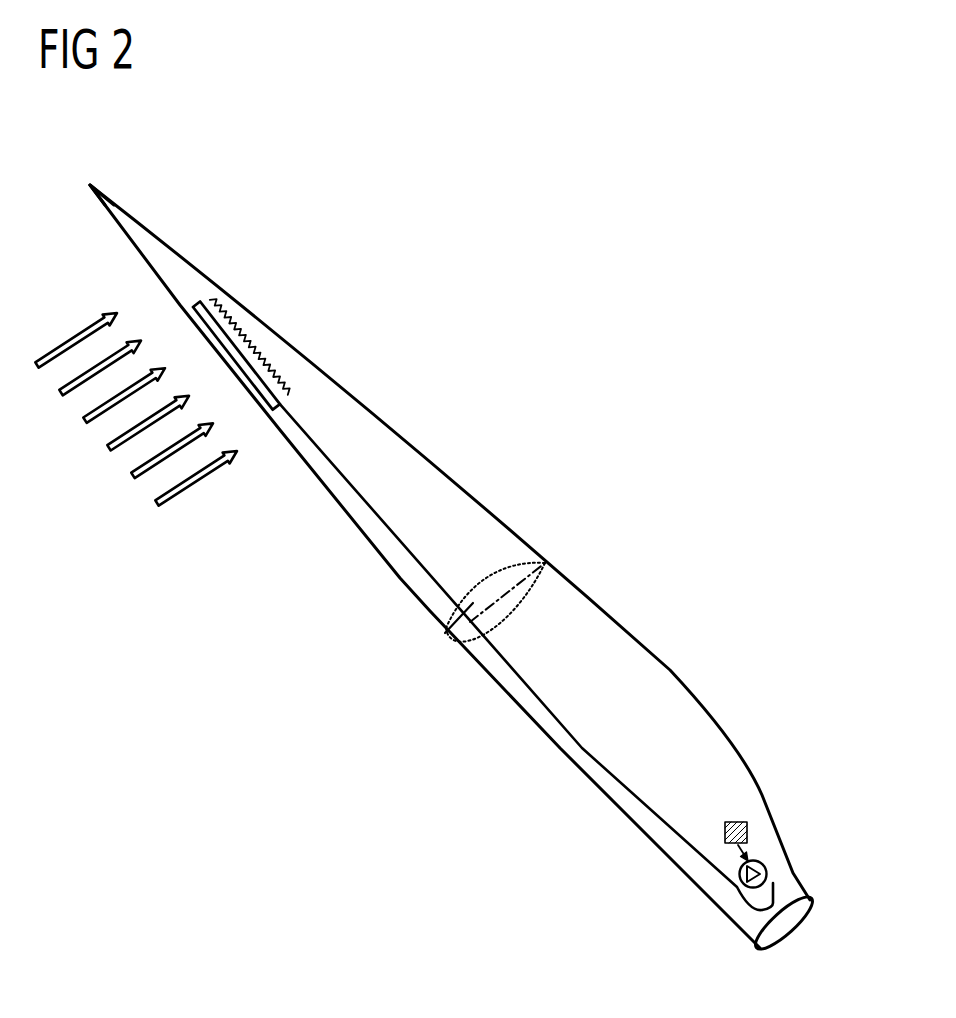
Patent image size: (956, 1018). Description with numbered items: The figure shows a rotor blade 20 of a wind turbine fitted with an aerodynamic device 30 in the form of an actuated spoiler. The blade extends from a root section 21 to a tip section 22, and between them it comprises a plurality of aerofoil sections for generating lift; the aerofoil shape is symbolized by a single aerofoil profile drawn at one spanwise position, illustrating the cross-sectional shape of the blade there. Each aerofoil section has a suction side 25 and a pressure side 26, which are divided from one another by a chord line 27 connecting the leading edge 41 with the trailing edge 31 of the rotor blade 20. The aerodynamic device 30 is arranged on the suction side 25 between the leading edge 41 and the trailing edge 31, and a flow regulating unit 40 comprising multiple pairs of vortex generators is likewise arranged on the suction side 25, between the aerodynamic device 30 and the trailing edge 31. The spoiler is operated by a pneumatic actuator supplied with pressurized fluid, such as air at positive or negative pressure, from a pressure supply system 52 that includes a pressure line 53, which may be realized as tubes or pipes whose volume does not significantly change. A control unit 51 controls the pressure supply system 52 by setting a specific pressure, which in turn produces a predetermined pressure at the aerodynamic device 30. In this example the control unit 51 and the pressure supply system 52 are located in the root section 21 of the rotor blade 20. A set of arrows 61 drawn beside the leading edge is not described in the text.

The rotor blade 20 is at (463, 535).
The root section 21 is at (783, 887).
The tip section 22 is at (90, 183).
The suction side 25 is at (512, 576).
The pressure side 26 is at (515, 600).
The chord line 27 is at (485, 600).
The aerodynamic device 30 is at (197, 304).
The trailing edge 31 is at (670, 672).
The flow regulating unit 40 is at (261, 343).
The leading edge 41 is at (530, 723).
The control unit 51 is at (735, 820).
The pressure supply system 52 is at (757, 861).
The pressure line 53 is at (582, 750).
The wind flow arrows 61 is at (197, 483).